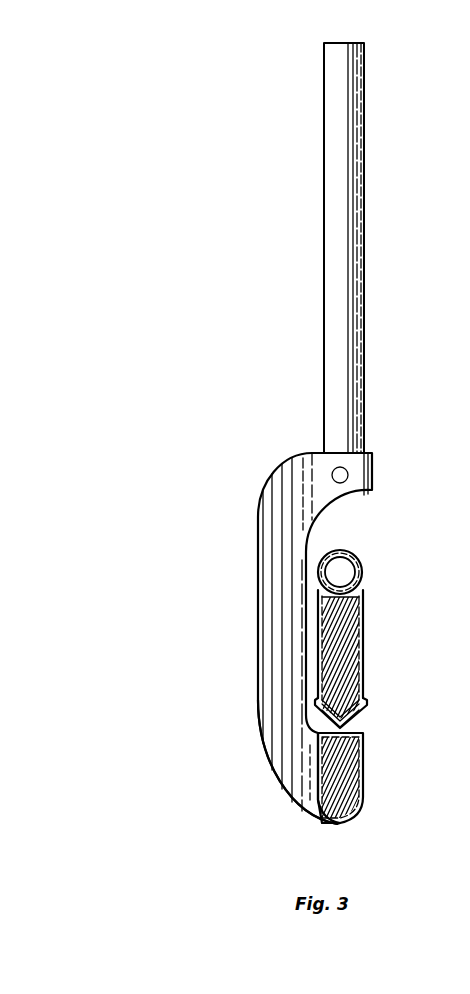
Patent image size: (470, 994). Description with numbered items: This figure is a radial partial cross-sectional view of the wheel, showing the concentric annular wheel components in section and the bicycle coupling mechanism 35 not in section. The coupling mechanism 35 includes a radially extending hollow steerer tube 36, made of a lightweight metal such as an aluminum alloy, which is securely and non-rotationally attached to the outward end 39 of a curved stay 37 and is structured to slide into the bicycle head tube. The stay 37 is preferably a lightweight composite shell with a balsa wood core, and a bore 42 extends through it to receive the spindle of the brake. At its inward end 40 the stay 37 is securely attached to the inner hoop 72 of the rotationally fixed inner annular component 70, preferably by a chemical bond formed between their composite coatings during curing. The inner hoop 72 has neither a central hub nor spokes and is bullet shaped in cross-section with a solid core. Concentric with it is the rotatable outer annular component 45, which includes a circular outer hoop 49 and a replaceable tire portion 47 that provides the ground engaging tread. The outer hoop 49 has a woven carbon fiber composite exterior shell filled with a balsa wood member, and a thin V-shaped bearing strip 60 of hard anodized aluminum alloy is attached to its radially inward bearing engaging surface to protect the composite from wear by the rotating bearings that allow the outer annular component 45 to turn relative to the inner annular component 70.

The bicycle coupling mechanism 35 is at (300, 407).
The steerer tube 36 is at (364, 173).
The curved stay 37 is at (277, 617).
The outward end 39 is at (323, 481).
The inward end 40 is at (312, 810).
The bore 42 is at (372, 478).
The outer annular component 45 is at (384, 616).
The tire portion 47 is at (350, 568).
The outer hoop 49 is at (363, 677).
The bearing strip 60 is at (348, 715).
The inner annular component 70 is at (384, 766).
The inner hoop 72 is at (363, 810).